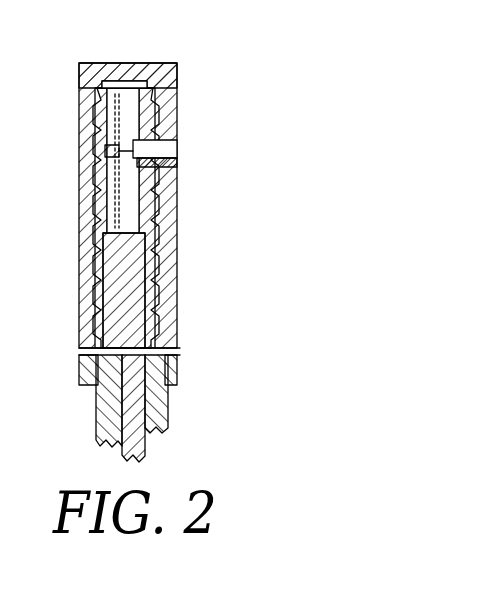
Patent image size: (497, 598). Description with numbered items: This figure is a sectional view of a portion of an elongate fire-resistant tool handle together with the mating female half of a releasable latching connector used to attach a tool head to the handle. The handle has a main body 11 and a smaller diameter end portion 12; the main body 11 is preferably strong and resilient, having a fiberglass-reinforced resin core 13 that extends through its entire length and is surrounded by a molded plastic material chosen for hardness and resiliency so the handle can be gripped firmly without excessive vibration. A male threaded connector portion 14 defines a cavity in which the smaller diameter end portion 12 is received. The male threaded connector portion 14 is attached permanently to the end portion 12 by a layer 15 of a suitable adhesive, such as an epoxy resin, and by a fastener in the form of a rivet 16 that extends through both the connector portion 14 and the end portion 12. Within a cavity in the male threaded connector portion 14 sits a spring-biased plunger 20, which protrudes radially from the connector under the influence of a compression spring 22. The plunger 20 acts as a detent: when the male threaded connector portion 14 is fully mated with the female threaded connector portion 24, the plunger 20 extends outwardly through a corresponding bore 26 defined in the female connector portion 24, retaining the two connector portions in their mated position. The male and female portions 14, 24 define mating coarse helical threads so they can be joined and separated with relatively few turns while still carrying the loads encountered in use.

The main body 11 is at (170, 409).
The smaller diameter end portion 12 is at (100, 276).
The fiberglass-reinforced resin core 13 is at (146, 443).
The male threaded connector portion 14 is at (129, 78).
The layer of adhesive 15 is at (150, 222).
The rivet 16 is at (180, 350).
The spring-biased plunger 20 is at (178, 147).
The compression spring 22 is at (97, 182).
The female threaded connector portion 24 is at (177, 110).
The bore 26 is at (178, 161).